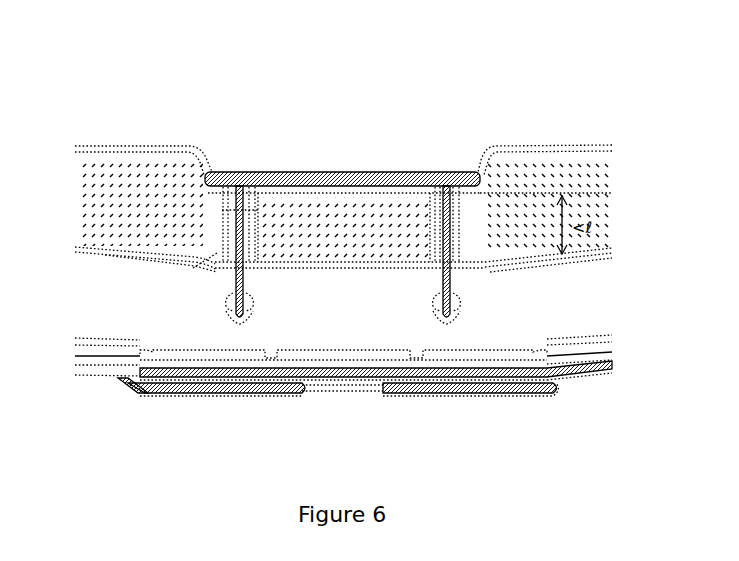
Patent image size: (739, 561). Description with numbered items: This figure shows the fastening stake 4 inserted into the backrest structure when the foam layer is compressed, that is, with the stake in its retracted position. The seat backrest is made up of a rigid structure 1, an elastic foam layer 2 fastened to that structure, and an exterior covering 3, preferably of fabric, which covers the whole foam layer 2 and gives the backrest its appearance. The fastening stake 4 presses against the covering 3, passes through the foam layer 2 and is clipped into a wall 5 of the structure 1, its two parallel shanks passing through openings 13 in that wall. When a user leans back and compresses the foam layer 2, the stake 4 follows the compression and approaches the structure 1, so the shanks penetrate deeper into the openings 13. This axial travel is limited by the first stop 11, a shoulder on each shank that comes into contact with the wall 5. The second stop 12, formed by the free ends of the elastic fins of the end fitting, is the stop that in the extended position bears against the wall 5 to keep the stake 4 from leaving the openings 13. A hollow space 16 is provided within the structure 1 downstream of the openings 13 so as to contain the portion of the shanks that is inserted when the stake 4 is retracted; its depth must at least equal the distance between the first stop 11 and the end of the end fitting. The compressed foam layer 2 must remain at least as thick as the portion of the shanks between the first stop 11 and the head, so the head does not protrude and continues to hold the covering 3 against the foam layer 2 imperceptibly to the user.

The rigid structure 1 is at (105, 383).
The elastic foam layer 2 is at (350, 232).
The exterior covering 3 is at (142, 148).
The fastening stake 4 is at (377, 143).
The wall 5 is at (106, 254).
The first stop 11 is at (257, 265).
The second stop 12 is at (465, 297).
The openings 13 is at (229, 271).
The hollow space 16 is at (350, 314).